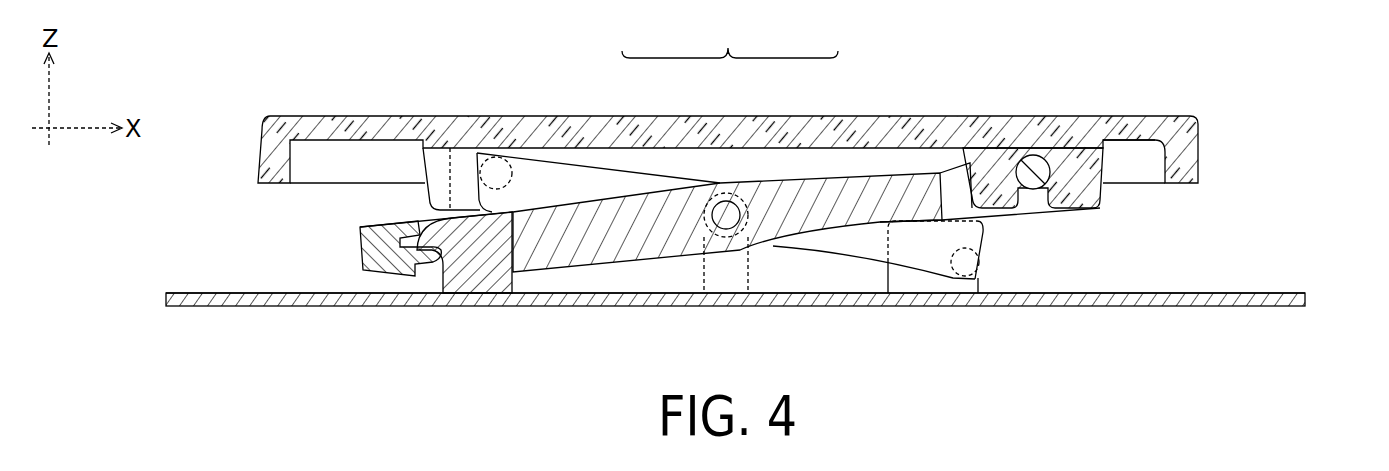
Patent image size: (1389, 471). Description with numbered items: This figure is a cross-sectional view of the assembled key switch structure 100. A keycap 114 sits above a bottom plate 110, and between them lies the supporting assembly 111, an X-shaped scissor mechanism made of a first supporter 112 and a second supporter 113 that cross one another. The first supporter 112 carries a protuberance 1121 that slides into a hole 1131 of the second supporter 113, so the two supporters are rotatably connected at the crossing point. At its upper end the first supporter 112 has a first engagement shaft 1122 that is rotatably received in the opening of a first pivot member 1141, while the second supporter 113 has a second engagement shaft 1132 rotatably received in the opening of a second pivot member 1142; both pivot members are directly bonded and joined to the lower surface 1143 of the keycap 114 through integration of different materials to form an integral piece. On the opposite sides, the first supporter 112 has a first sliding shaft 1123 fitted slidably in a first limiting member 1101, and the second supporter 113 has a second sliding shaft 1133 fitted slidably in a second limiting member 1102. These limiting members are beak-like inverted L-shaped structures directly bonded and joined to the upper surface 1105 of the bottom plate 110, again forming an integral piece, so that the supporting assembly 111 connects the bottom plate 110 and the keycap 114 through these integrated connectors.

The key switch structure 100 is at (190, 52).
The bottom plate 110 is at (1305, 299).
The supporting assembly 111 is at (730, 39).
The first supporter 112 is at (641, 170).
The second supporter 113 is at (846, 170).
The keycap 114 is at (1185, 119).
The first limiting member 1101 is at (916, 262).
The second limiting member 1102 is at (488, 260).
The upper surface of the bottom plate 1105 is at (1229, 291).
The protuberance 1121 is at (745, 293).
The first engagement shaft 1122 is at (478, 172).
The first sliding shaft 1123 is at (977, 276).
The hole 1131 is at (703, 293).
The second engagement shaft 1132 is at (1031, 155).
The second sliding shaft 1133 is at (420, 277).
The first pivot member 1141 is at (458, 172).
The second pivot member 1142 is at (1083, 153).
The lower surface of the keycap 1143 is at (1138, 143).